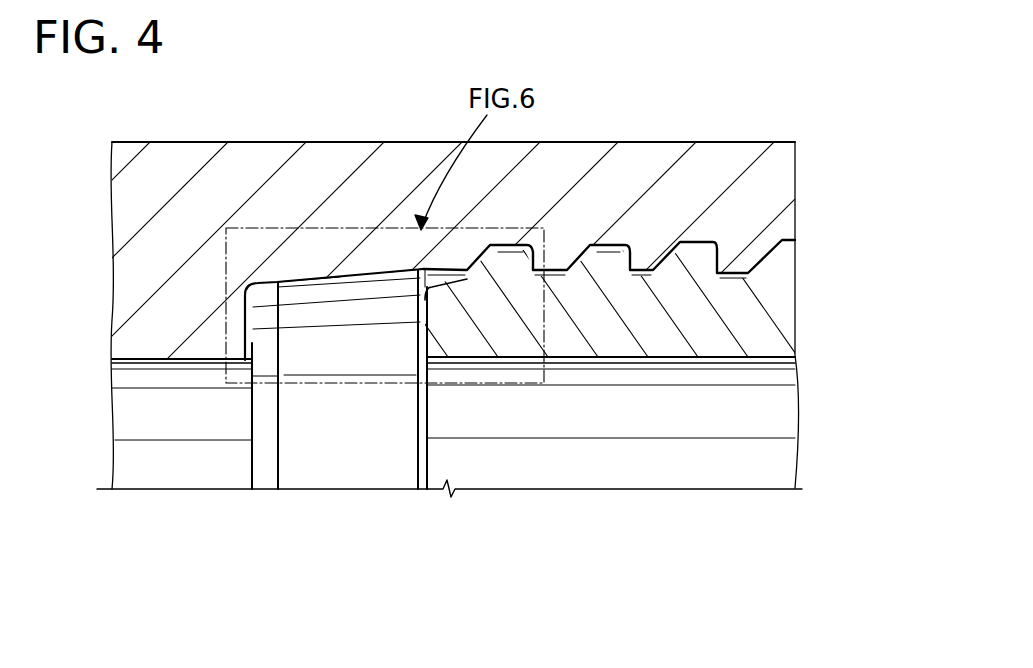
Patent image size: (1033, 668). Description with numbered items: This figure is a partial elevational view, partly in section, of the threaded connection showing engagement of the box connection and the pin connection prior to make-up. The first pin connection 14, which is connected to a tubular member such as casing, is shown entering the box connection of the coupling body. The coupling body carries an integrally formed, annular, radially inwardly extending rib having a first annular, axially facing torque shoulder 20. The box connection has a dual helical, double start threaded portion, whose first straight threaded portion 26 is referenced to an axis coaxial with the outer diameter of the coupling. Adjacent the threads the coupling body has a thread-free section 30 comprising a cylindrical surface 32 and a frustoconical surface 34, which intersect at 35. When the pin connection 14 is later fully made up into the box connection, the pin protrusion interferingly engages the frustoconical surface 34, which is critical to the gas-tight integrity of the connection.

The first pin connection 14 is at (703, 373).
The first annular, axially facing torque shoulder 20 is at (250, 343).
The first straight threaded portion 26 is at (609, 246).
The thread-free section 30 is at (367, 272).
The cylindrical surface 32 is at (557, 403).
The frustoconical surface 34 is at (330, 284).
The intersection 35 is at (422, 271).